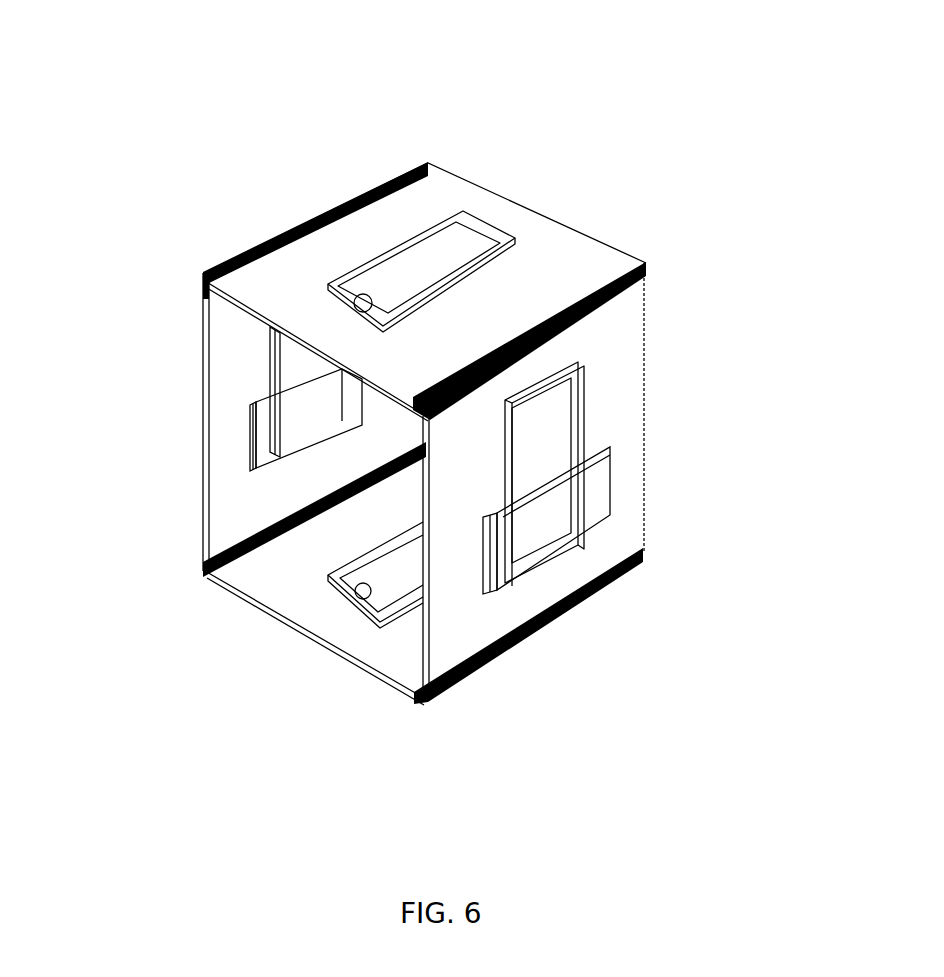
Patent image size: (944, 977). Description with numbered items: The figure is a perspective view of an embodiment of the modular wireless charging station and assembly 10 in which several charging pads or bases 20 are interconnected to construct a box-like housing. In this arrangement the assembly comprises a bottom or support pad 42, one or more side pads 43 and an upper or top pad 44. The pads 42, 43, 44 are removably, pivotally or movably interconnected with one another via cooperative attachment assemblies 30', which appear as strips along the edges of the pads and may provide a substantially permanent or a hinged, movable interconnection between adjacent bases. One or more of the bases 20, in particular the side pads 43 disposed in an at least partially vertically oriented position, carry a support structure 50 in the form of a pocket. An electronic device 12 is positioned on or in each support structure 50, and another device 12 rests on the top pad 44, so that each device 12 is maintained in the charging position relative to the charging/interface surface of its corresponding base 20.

The wireless charging station and assembly 10 is at (532, 78).
The electronic device 12 is at (463, 210).
The charging pad or base 20 is at (431, 472).
The bottom or support pad 42 is at (378, 690).
The side pad 43 is at (645, 363).
The upper or top pad 44 is at (555, 225).
The attachment assembly 30' is at (425, 424).
The support structure 50 is at (598, 507).